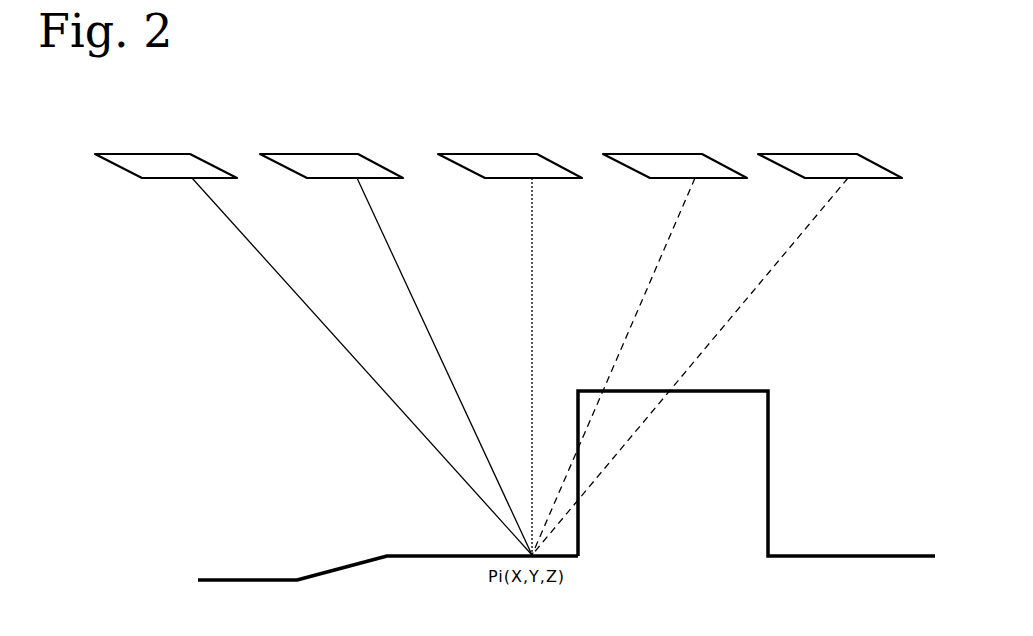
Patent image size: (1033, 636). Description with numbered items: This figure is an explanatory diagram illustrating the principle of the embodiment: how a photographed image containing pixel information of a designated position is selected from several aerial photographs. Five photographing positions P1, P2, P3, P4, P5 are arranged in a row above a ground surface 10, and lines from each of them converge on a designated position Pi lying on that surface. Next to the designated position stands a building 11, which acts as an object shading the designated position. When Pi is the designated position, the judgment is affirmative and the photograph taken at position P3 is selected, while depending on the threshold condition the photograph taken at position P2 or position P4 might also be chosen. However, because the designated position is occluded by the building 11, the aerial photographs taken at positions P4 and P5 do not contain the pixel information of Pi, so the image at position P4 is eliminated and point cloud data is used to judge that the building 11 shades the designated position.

The object surface 10 is at (387, 556).
The building 11 is at (770, 412).
The projection plane P1 is at (313, 338).
The position P2 is at (396, 338).
The position P3 is at (510, 338).
The position P4 is at (639, 338).
The position P5 is at (717, 338).